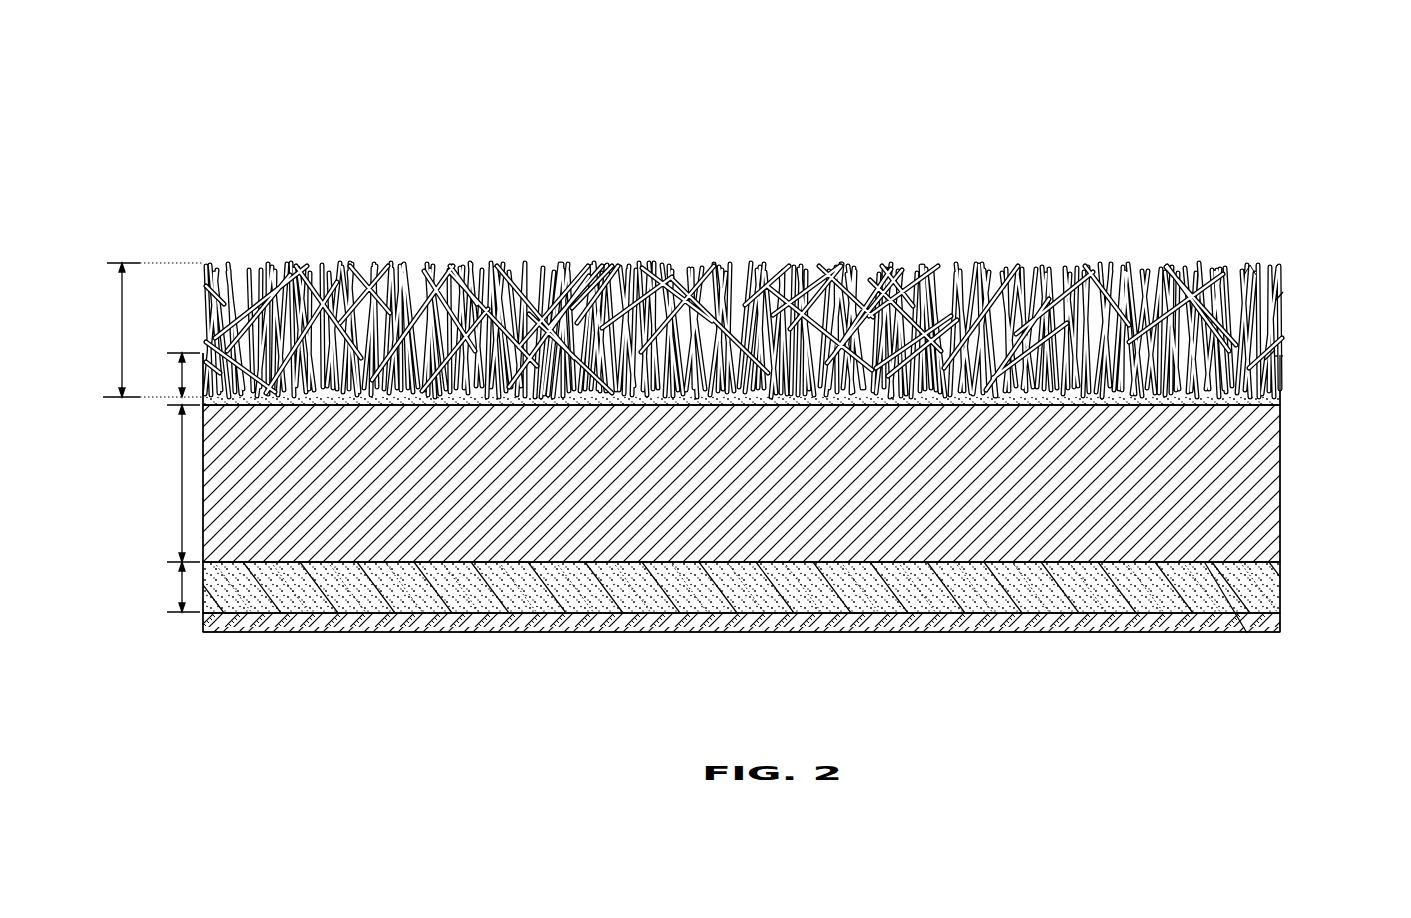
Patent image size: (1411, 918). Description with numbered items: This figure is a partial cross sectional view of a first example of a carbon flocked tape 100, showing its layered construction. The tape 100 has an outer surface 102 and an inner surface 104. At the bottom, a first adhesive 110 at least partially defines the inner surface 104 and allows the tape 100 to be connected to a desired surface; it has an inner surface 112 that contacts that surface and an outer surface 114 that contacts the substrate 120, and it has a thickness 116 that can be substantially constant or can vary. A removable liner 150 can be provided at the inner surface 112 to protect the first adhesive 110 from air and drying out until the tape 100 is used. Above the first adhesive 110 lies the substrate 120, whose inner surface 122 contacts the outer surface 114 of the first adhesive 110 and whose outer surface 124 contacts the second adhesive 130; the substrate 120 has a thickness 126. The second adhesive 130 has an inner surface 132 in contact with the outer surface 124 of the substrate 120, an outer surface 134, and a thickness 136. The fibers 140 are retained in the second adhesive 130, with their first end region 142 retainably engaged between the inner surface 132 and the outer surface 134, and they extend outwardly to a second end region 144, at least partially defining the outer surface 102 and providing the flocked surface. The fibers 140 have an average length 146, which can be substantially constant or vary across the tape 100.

The carbon flocked tape 100 is at (1047, 201).
The outer surface 102 is at (1207, 262).
The inner surface 104 is at (1106, 615).
The first adhesive 110 is at (1270, 588).
The inner surface 112 is at (1180, 622).
The outer surface 114 is at (1247, 633).
The thickness 116 is at (182, 590).
The substrate 120 is at (1245, 492).
The inner surface 122 is at (1237, 560).
The outer surface 124 is at (1232, 402).
The thickness 126 is at (182, 485).
The second adhesive 130 is at (1283, 368).
The inner surface 132 is at (1283, 386).
The outer surface 134 is at (1283, 360).
The thickness 136 is at (182, 388).
The fibers 140 is at (1283, 292).
The first end region 142 is at (1275, 350).
The second end region 144 is at (1250, 265).
The average length 146 is at (120, 318).
The removable liner 150 is at (465, 620).